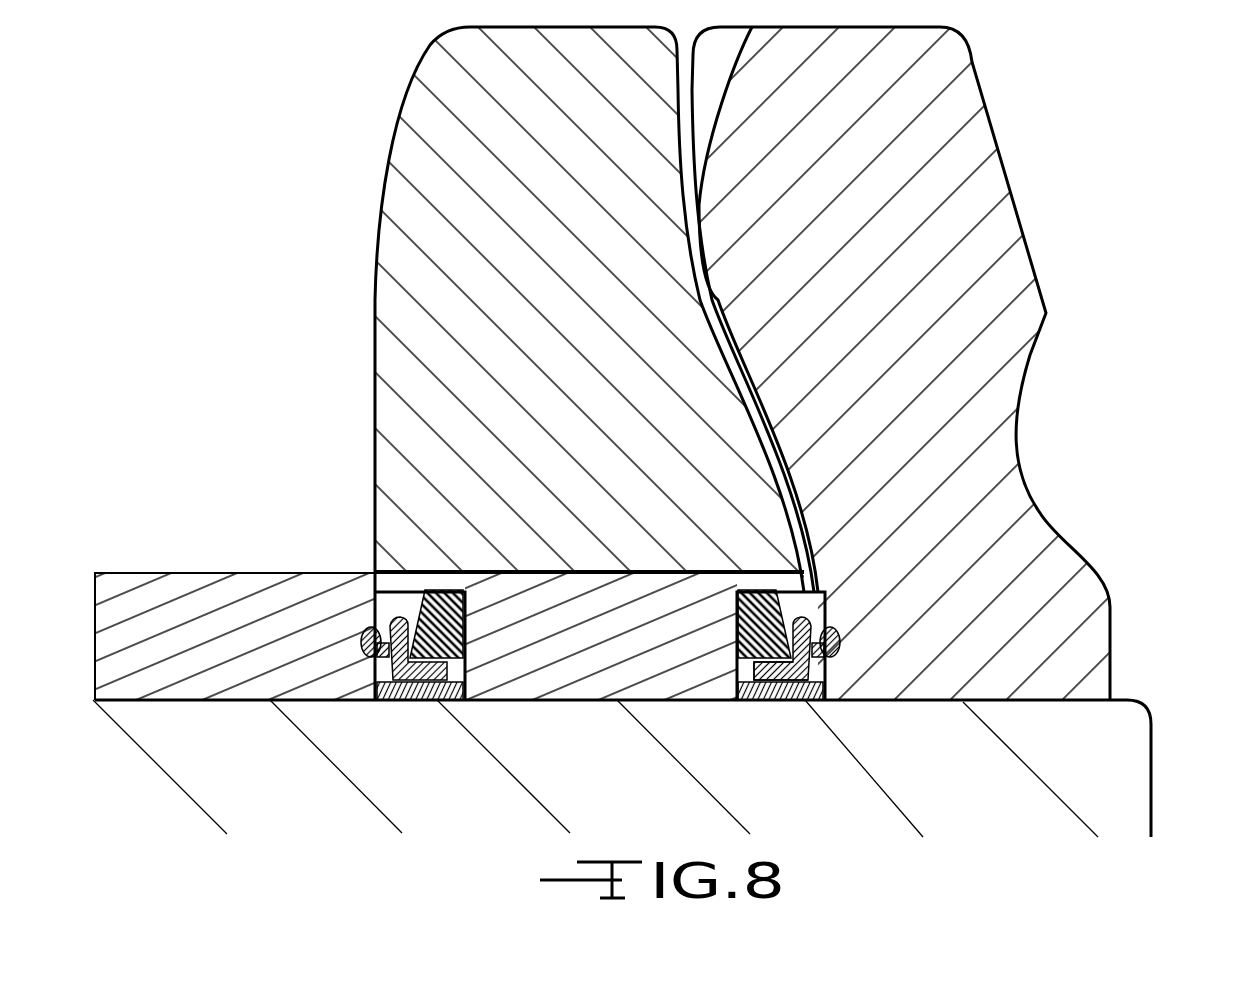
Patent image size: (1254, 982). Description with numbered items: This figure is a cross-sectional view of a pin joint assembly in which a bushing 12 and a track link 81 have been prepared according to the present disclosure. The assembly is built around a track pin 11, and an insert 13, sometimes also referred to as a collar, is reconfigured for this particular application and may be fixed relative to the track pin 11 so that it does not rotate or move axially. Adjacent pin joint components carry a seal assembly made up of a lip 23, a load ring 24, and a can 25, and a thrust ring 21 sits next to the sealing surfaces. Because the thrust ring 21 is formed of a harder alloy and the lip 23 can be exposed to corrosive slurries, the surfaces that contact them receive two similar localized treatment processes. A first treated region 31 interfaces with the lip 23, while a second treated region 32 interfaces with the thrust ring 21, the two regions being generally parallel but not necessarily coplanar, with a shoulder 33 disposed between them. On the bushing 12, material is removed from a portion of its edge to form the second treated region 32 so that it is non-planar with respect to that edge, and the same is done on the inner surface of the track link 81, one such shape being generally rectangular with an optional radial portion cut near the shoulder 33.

The track pin 11 is at (1115, 777).
The bushing 12 is at (127, 590).
The insert 13 is at (533, 607).
The thrust ring 21 is at (420, 695).
The lip 23 is at (388, 627).
The load ring 24 is at (425, 617).
The can 25 is at (372, 680).
The first treated region 31 is at (362, 647).
The second treated region 32 is at (372, 690).
The shoulder 33 is at (838, 675).
The track link 81 is at (960, 125).